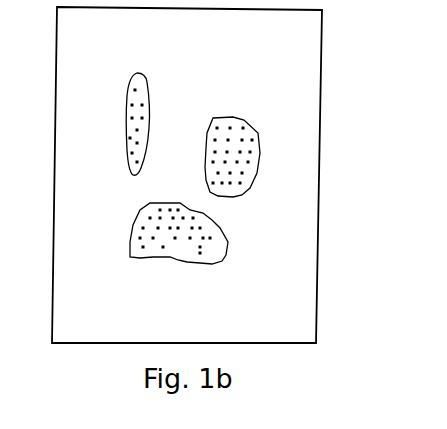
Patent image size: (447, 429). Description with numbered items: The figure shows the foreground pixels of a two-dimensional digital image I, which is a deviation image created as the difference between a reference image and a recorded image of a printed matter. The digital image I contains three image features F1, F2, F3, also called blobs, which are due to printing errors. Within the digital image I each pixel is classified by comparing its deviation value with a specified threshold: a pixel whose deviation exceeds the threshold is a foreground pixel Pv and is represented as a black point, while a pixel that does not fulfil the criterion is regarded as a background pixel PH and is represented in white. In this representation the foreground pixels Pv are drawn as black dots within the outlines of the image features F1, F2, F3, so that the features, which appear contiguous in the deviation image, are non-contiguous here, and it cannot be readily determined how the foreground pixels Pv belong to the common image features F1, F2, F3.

The digital image I is at (300, 257).
The image feature F1 is at (124, 69).
The image feature F2 is at (258, 115).
The image feature F3 is at (213, 271).
The foreground pixel Pv is at (145, 103).
The background pixel PH is at (203, 160).